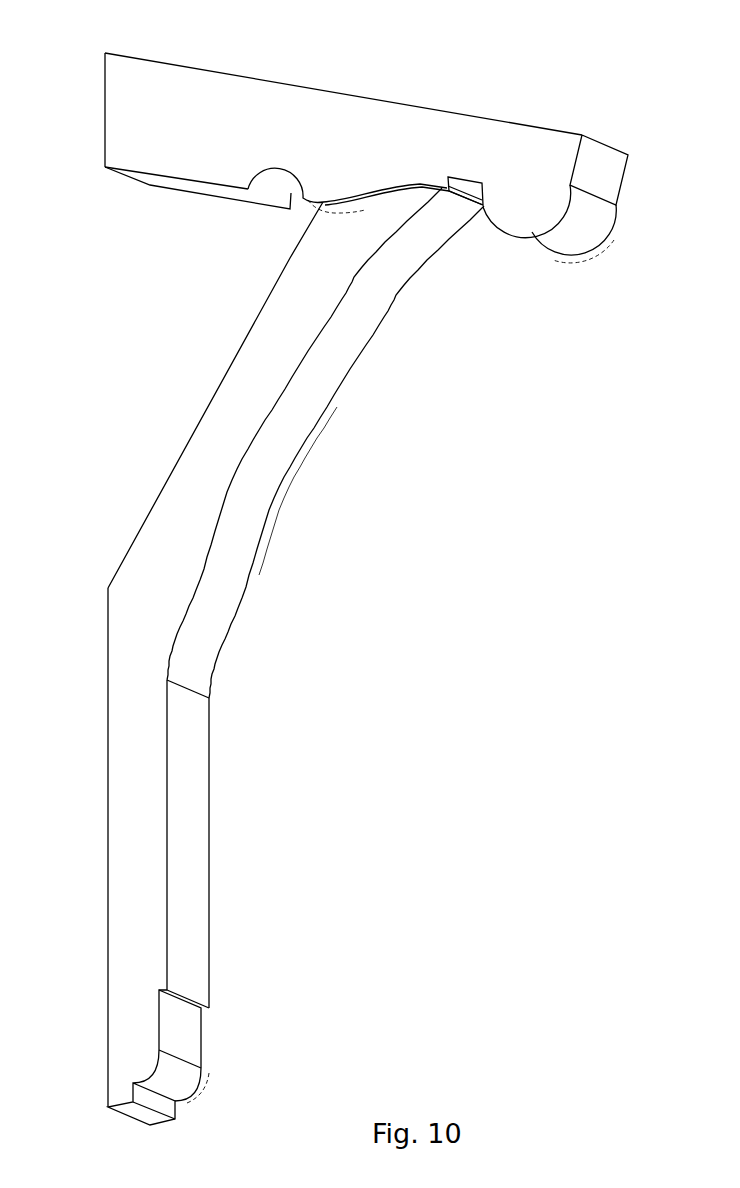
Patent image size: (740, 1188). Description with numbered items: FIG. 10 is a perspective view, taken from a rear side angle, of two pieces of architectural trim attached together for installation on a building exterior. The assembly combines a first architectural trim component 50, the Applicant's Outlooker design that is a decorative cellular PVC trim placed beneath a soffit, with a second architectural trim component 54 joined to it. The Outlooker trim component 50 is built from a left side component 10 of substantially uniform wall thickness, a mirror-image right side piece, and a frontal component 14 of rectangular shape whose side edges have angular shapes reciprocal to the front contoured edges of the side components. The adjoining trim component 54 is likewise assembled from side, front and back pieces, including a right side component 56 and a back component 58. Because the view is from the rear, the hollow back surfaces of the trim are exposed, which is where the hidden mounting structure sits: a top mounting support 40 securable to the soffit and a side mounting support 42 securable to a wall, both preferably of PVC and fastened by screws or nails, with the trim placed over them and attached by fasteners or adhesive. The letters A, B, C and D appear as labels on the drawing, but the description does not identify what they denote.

The left side component 10 is at (507, 135).
The frontal component 14 is at (521, 238).
The top mounting support 40 is at (190, 68).
The side mounting support 42 is at (71, 110).
The architectural trim component 50 is at (377, 85).
The architectural trim component 54 is at (247, 613).
The right side component 56 is at (216, 844).
The back component 58 is at (76, 847).
The fillet A is at (320, 207).
The radius B is at (612, 243).
The curvature C is at (300, 491).
The radius D is at (210, 1076).